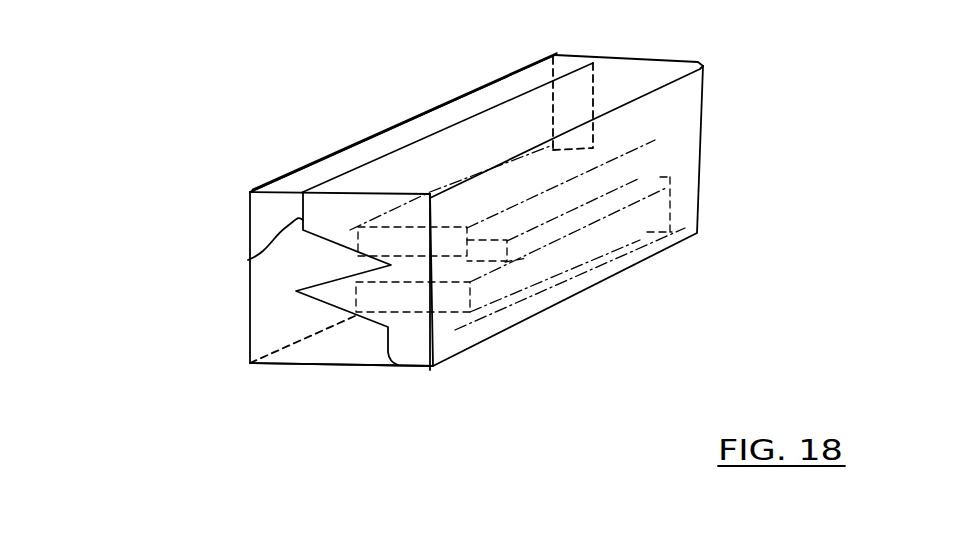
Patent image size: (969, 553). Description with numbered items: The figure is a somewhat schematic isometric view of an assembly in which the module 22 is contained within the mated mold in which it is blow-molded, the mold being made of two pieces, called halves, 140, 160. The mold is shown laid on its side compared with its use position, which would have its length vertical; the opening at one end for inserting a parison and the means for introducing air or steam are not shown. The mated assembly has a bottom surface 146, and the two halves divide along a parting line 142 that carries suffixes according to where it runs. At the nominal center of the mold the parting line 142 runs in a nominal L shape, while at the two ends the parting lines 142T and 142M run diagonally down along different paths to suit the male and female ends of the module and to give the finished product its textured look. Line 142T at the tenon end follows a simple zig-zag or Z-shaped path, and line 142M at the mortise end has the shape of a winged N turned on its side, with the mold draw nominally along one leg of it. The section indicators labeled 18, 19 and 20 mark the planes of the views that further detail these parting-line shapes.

The mold half 140 is at (690, 130).
The mold half 160 is at (320, 170).
The parting line 142 is at (455, 126).
The tenon-end parting line 142T is at (600, 85).
The mortise-end parting line 142M is at (249, 260).
The bottom surface 146 is at (333, 367).
The module 22 is at (525, 258).
The section line 18 is at (55, 392).
The section line 19 is at (872, 78).
The section line 20 is at (248, 240).